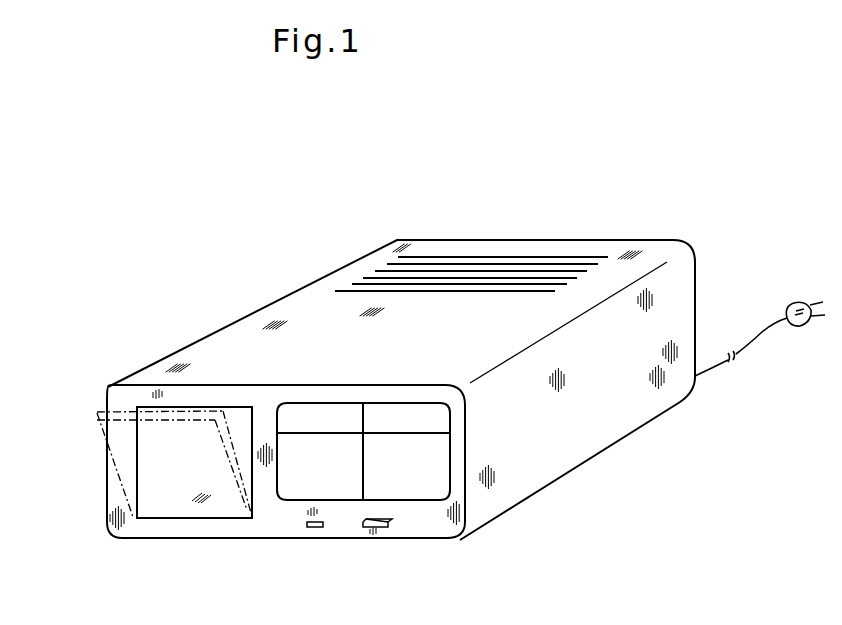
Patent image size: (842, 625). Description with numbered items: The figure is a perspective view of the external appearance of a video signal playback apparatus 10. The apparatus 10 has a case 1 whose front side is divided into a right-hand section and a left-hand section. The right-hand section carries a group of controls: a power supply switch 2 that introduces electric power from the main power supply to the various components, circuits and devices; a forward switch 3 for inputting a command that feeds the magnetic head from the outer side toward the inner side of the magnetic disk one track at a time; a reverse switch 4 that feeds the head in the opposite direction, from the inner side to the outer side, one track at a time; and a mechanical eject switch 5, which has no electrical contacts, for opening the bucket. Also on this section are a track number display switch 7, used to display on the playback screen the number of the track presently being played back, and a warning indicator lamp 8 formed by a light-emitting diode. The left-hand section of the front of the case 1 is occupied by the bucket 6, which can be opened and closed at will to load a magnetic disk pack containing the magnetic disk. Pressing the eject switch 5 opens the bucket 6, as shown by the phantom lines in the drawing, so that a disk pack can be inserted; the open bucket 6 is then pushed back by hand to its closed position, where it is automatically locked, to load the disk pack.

The video signal playback apparatus 10 is at (466, 355).
The case 1 is at (697, 273).
The power supply switch 2 is at (411, 404).
The forward switch 3 is at (448, 455).
The reverse switch 4 is at (283, 477).
The mechanical eject switch 5 is at (323, 404).
The bucket 6 is at (162, 512).
The track number display switch 7 is at (384, 529).
The warning indicator lamp 8 is at (315, 529).